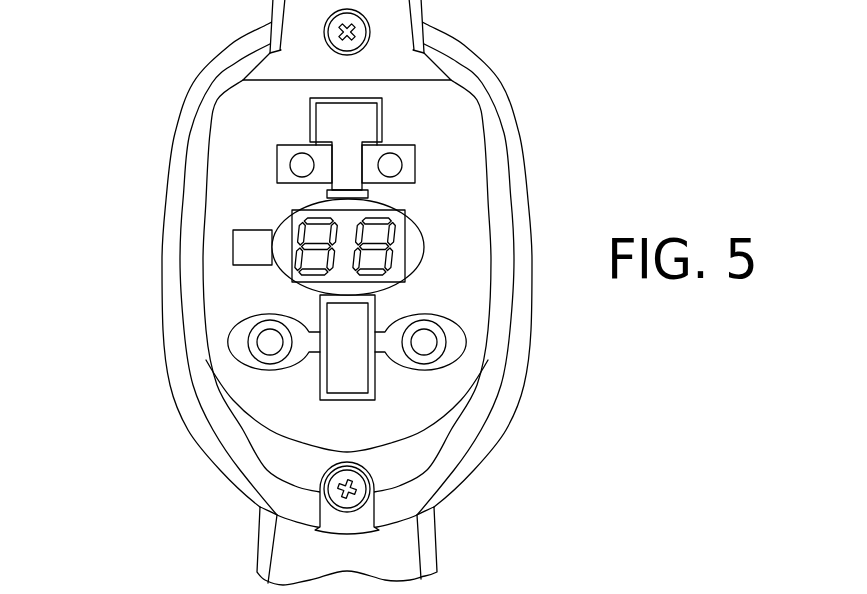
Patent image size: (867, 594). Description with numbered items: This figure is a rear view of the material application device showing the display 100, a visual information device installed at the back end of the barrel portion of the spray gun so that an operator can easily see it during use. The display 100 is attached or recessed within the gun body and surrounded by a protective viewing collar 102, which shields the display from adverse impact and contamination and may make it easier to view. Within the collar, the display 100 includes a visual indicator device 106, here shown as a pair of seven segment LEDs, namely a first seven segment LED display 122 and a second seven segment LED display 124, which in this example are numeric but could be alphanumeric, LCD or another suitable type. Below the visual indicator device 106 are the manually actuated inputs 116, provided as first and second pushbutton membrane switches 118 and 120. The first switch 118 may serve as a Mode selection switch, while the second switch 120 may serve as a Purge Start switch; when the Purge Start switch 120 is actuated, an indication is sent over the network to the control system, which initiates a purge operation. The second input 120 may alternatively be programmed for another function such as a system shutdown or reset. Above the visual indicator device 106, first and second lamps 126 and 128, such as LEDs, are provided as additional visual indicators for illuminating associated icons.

The display 100 is at (575, 150).
The protective viewing collar 102 is at (228, 482).
The visual indicator device 106 is at (240, 212).
The manually actuated inputs 116 is at (160, 260).
The first pushbutton membrane switch 118 is at (250, 370).
The second pushbutton membrane switch 120 is at (445, 367).
The first seven segment LED display 122 is at (287, 278).
The second seven segment LED display 124 is at (415, 282).
The first lamp 126 is at (273, 143).
The second lamp 128 is at (418, 142).